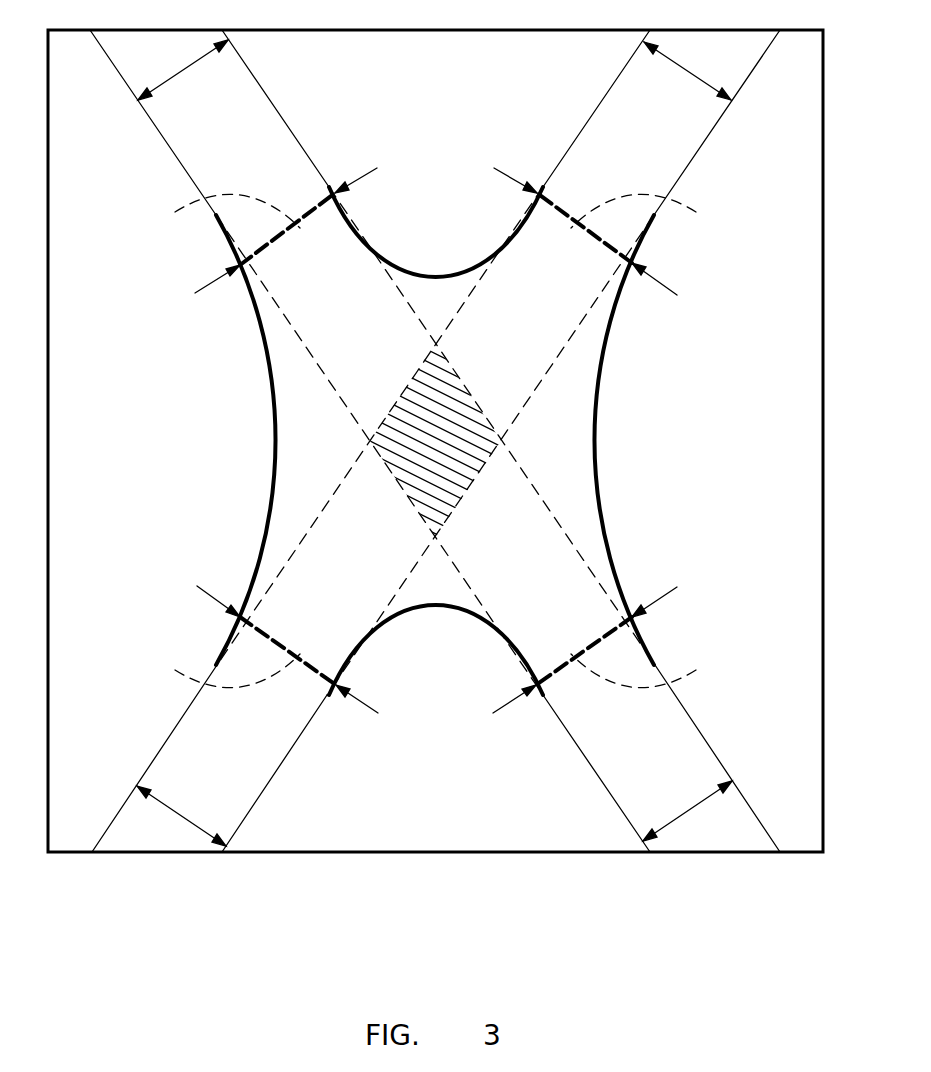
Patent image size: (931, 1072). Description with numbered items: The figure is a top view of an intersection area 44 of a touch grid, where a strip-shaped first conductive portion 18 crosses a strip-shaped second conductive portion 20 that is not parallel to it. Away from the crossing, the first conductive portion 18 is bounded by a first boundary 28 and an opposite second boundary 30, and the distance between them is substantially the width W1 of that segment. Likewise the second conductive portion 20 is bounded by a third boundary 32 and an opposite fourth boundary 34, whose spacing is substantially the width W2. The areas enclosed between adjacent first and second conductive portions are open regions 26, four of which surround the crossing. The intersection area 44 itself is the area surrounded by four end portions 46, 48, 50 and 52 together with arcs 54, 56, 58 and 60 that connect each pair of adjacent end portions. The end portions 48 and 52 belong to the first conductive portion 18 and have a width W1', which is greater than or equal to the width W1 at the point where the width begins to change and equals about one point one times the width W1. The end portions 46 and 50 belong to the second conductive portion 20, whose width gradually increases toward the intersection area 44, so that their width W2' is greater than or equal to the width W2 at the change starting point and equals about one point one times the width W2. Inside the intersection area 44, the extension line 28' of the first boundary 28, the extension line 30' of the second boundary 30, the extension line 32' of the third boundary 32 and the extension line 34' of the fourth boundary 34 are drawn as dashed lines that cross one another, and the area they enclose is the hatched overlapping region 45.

The first conductive portion 18 is at (683, 110).
The second conductive portion 20 is at (662, 755).
The open region 26 is at (452, 151).
The first boundary 28 is at (504, 506).
The second boundary 30 is at (359, 453).
The third boundary 32 is at (504, 374).
The fourth boundary 34 is at (353, 433).
The extension line of the first boundary 28' is at (527, 455).
The extension line of the second boundary 30' is at (380, 416).
The extension line of the third boundary 32' is at (511, 426).
The extension line of the fourth boundary 34' is at (379, 460).
The intersection area 44 is at (618, 349).
The overlapping region 45 is at (450, 453).
The end portion 46 is at (220, 212).
The end portion 48 is at (650, 212).
The end portion 50 is at (652, 671).
The end portion 52 is at (220, 671).
The arc 54 is at (444, 275).
The arc 56 is at (598, 438).
The arc 58 is at (427, 608).
The arc 60 is at (272, 440).
The width of the first conductive portion W1 is at (434, 441).
The width of the second conductive portion W2 is at (433, 438).
The width of the end portions of the first conductive portion W1' is at (432, 440).
The width of the end portions of the second conductive portion W2' is at (441, 440).